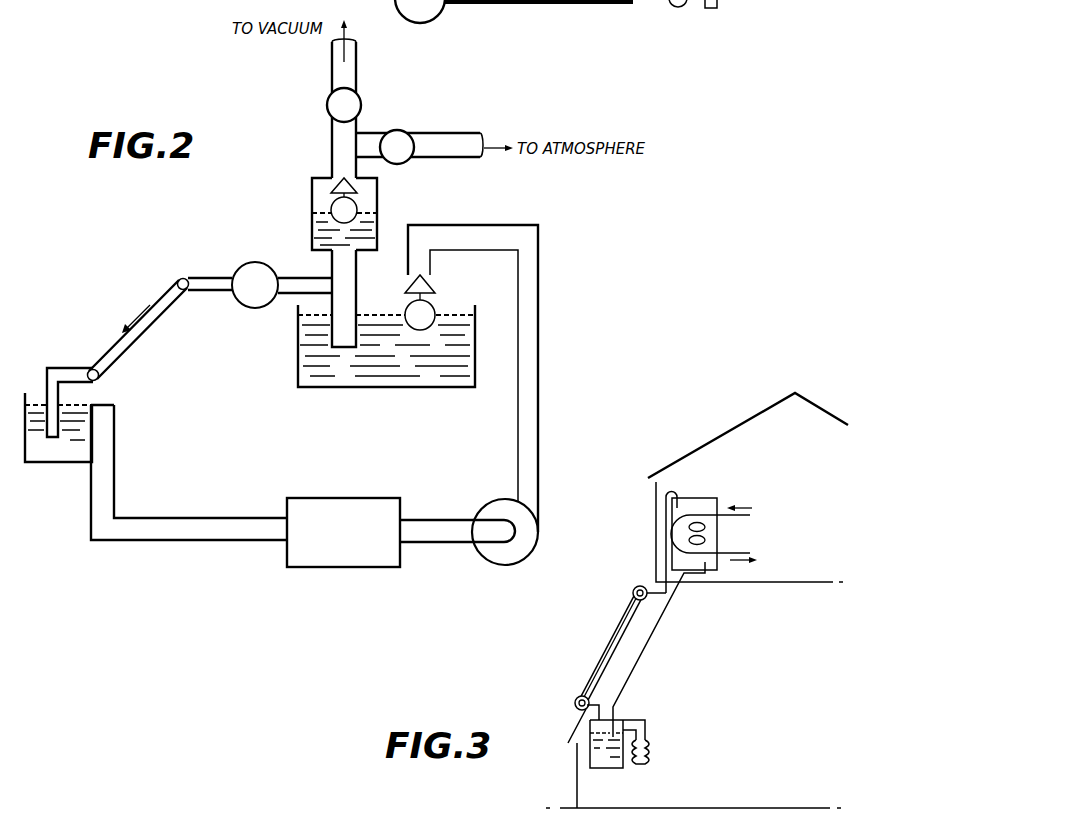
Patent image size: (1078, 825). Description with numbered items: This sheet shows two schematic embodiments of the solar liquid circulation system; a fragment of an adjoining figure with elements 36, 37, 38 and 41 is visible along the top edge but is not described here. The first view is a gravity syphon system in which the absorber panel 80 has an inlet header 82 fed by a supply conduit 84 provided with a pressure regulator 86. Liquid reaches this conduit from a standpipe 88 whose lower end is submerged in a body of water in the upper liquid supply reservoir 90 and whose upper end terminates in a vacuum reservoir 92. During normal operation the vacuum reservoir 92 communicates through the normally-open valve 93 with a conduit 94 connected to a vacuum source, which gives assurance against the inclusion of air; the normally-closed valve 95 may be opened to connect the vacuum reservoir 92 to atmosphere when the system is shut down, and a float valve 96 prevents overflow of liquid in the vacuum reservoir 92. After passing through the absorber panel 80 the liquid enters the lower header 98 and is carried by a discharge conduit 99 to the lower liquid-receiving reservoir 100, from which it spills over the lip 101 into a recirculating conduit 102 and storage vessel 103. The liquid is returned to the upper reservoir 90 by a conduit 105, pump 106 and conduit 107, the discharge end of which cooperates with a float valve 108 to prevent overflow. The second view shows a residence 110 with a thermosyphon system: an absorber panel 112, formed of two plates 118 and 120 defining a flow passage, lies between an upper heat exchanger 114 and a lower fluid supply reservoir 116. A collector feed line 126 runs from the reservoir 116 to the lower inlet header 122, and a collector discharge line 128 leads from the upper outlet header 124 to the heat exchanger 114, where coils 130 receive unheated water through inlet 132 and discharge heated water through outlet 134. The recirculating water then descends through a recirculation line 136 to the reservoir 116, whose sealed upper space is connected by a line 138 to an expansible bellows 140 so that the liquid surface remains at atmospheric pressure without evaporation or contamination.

In FIG. 2, the conduit 36 is at (578, 0).
In FIG. 2, the fitting 37 is at (718, 4).
In FIG. 2, the vessel 38 is at (457, 4).
In FIG. 2, the valve 41 is at (675, 8).
In FIG. 2, the absorber panel 80 is at (148, 322).
In FIG. 2, the inlet header 82 is at (178, 283).
In FIG. 2, the supply conduit 84 is at (305, 278).
In FIG. 2, the pressure regulator 86 is at (260, 308).
In FIG. 2, the standpipe 88 is at (357, 285).
In FIG. 2, the upper liquid supply reservoir 90 is at (476, 360).
In FIG. 2, the vacuum reservoir 92 is at (378, 237).
In FIG. 2, the normally-open valve 93 is at (361, 98).
In FIG. 2, the conduit 94 is at (358, 62).
In FIG. 2, the normally-closed valve 95 is at (403, 131).
In FIG. 2, the float valve 96 is at (357, 206).
In FIG. 2, the lower header 98 is at (96, 366).
In FIG. 2, the discharge conduit 99 is at (50, 366).
In FIG. 2, the lower liquid-receiving reservoir 100 is at (22, 458).
In FIG. 2, the lip 101 is at (95, 405).
In FIG. 2, the recirculating conduit 102 is at (113, 490).
In FIG. 2, the storage vessel 103 is at (330, 498).
In FIG. 2, the conduit 105 is at (428, 520).
In FIG. 2, the pump 106 is at (538, 520).
In FIG. 2, the conduit 107 is at (540, 408).
In FIG. 2, the float valve 108 is at (436, 308).
In FIG. 3, the residence 110 is at (818, 406).
In FIG. 3, the absorber panel 112 is at (620, 612).
In FIG. 3, the heat exchanger 114 is at (697, 498).
In FIG. 3, the fluid supply reservoir 116 is at (605, 762).
In FIG. 3, the plate 118 is at (614, 641).
In FIG. 3, the plate 120 is at (606, 662).
In FIG. 3, the lower inlet header 122 is at (576, 697).
In FIG. 3, the upper outlet header 124 is at (637, 586).
In FIG. 3, the collector feed line 126 is at (598, 714).
In FIG. 3, the collector discharge line 128 is at (665, 548).
In FIG. 3, the coils 130 is at (702, 536).
In FIG. 3, the inlet 132 is at (750, 515).
In FIG. 3, the outlet 134 is at (750, 553).
In FIG. 3, the recirculation line 136 is at (660, 627).
In FIG. 3, the line 138 is at (645, 722).
In FIG. 3, the bellows 140 is at (650, 750).